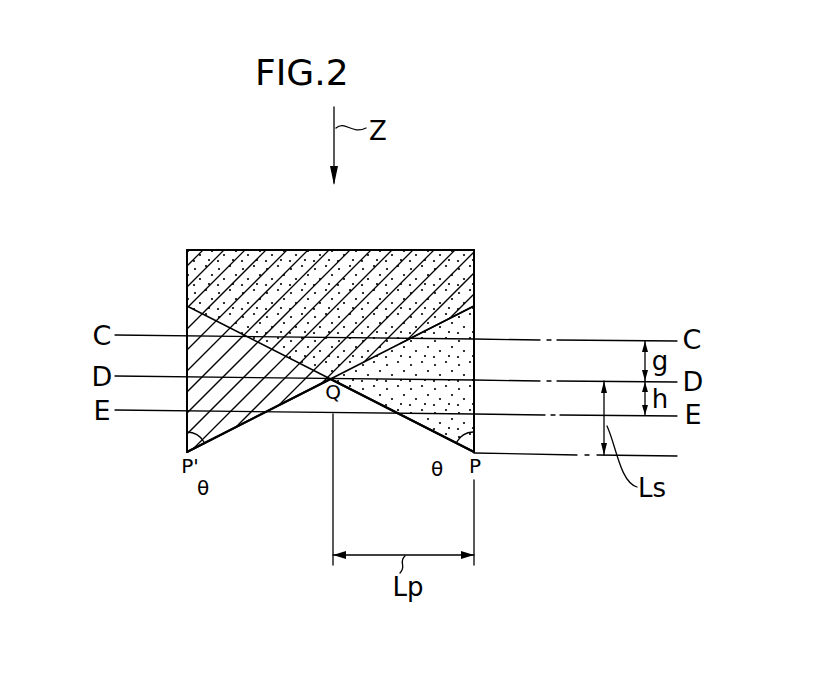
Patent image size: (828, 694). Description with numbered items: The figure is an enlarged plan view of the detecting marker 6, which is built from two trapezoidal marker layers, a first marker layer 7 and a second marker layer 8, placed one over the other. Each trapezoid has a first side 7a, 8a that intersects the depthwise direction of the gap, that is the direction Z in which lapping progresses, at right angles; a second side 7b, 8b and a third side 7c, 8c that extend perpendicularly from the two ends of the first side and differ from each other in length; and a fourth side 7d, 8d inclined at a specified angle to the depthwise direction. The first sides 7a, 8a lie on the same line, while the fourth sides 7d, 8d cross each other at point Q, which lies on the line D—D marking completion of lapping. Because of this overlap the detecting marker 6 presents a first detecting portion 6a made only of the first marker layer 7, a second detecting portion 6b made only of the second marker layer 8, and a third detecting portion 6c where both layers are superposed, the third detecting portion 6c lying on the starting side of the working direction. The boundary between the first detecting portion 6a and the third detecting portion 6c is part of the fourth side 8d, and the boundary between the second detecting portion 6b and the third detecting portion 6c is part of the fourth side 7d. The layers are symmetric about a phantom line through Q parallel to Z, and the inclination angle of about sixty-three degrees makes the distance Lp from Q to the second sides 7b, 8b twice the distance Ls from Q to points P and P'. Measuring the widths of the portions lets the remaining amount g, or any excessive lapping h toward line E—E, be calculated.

The detecting marker 6 is at (437, 228).
The first detecting portion 6a is at (475, 397).
The second detecting portion 6b is at (187, 360).
The third detecting portion 6c is at (263, 250).
The first marker layer 7 is at (478, 339).
The first side of first marker layer 7a is at (453, 250).
The second side of first marker layer 7b is at (475, 318).
The third side of first marker layer 7c is at (187, 279).
The fourth side of first marker layer 7d is at (407, 419).
The second marker layer 8 is at (226, 434).
The first side of second marker layer 8a is at (388, 250).
The second side of second marker layer 8b is at (187, 434).
The third side of second marker layer 8c is at (475, 268).
The fourth side of second marker layer 8d is at (265, 417).